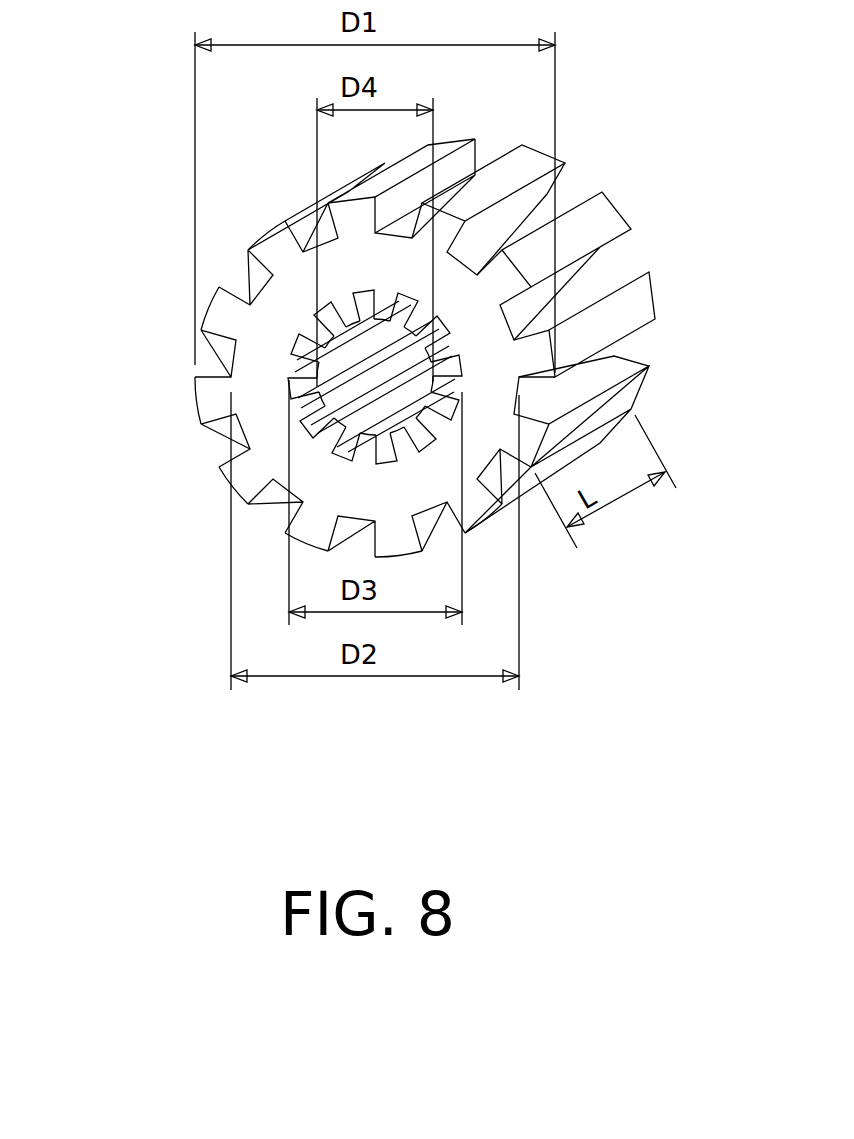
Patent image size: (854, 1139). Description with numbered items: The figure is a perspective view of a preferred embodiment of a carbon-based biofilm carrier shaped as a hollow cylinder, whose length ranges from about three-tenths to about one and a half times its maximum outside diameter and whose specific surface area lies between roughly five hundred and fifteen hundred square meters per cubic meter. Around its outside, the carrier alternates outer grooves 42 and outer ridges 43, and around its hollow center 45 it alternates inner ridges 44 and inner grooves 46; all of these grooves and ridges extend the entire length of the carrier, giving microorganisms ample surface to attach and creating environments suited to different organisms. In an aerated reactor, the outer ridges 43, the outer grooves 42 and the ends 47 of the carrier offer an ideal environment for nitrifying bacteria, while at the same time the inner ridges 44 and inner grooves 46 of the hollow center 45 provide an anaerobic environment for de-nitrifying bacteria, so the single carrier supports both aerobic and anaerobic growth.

The outer grooves 42 is at (231, 358).
The outer ridges 43 is at (206, 310).
The inner ridges 44 is at (382, 317).
The hollow center 45 is at (400, 362).
The inner grooves 46 is at (463, 410).
The ends 47 is at (257, 402).